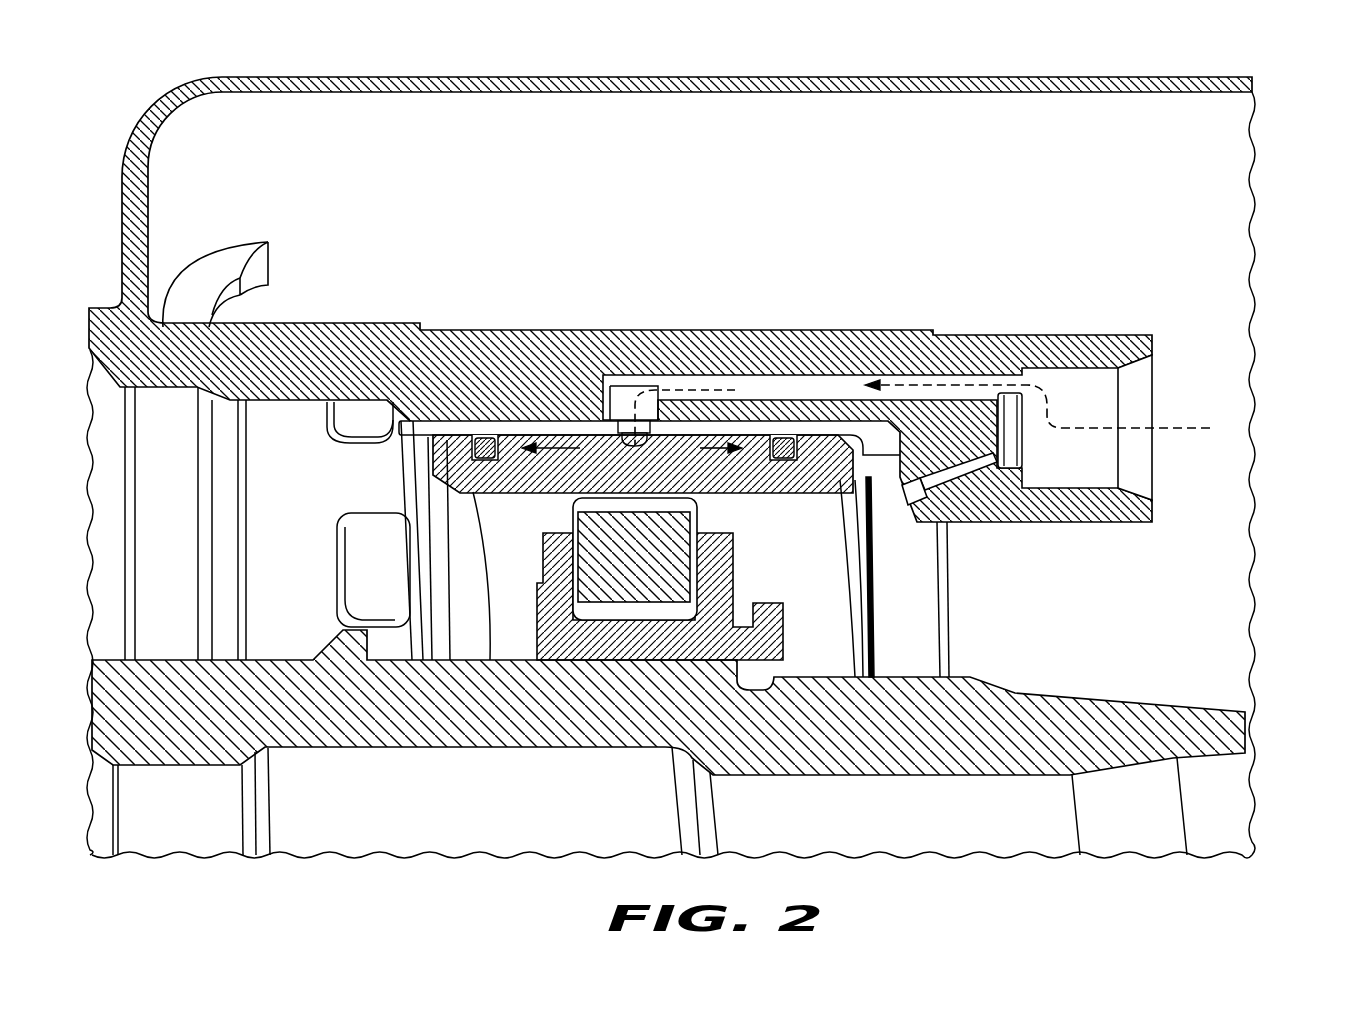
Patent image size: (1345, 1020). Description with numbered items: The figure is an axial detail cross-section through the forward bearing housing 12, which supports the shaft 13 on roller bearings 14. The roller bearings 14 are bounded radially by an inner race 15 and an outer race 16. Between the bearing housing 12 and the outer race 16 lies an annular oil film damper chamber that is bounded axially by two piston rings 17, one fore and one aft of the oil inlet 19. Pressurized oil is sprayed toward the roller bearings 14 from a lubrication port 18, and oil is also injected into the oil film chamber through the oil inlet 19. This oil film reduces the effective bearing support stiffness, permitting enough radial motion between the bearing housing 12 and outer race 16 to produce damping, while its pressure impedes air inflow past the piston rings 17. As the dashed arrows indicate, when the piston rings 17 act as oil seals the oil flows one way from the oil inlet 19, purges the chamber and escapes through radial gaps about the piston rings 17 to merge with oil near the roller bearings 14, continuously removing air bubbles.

The bearing housing 12 is at (960, 240).
The shaft 13 is at (1015, 735).
The roller bearings 14 is at (650, 567).
The inner race 15 is at (767, 640).
The outer race 16 is at (720, 473).
The piston rings 17 is at (485, 437).
The lubrication port 18 is at (938, 463).
The oil inlet 19 is at (848, 387).